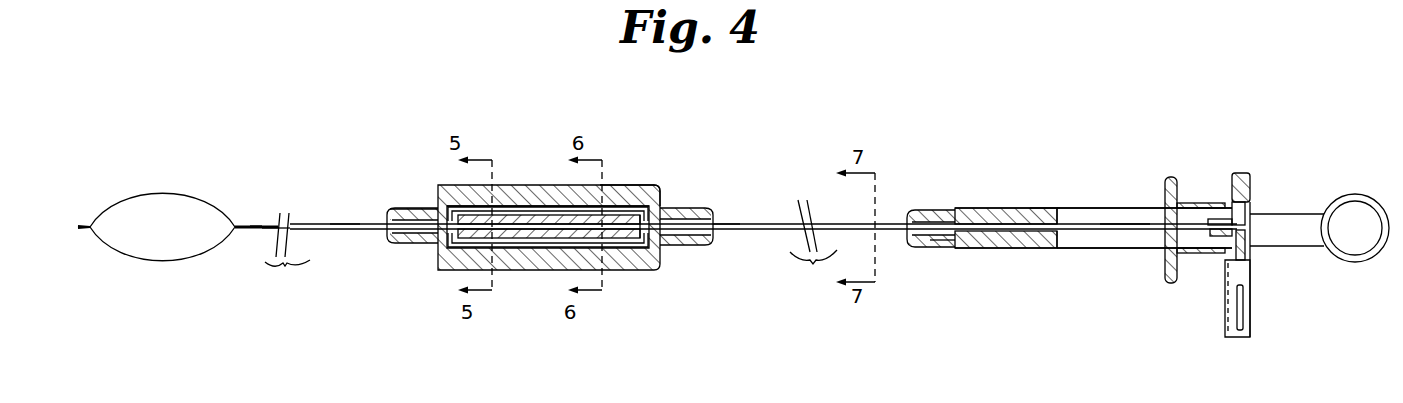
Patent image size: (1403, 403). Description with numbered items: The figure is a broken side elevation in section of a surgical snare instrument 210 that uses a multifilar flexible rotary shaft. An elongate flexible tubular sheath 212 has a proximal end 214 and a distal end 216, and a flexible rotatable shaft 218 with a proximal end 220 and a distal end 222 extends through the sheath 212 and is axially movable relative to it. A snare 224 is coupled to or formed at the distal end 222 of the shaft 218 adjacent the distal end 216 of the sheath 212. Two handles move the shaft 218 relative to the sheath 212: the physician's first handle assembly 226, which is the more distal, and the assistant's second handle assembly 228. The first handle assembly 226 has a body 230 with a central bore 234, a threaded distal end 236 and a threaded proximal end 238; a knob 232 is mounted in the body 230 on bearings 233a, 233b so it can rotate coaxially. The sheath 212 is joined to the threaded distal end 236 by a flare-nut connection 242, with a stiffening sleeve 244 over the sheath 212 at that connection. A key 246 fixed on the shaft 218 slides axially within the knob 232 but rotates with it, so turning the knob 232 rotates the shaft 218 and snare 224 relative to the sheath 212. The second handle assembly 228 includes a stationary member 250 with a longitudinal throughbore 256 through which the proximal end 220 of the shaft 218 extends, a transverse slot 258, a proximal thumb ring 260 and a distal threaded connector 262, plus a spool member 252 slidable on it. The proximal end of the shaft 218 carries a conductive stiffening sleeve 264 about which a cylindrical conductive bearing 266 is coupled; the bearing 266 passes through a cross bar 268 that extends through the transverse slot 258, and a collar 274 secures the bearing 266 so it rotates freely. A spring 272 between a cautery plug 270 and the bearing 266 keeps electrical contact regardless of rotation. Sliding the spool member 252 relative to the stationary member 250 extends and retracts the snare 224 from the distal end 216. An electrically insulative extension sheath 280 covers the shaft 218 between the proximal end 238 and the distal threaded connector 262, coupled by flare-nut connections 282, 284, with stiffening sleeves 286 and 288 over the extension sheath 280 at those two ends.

The surgical snare instrument 210 is at (841, 126).
The elongate flexible tubular sheath 212 is at (268, 232).
The proximal end of the sheath 214 is at (297, 222).
The distal end of the sheath 216 is at (256, 225).
The flexible rotatable shaft 218 is at (355, 223).
The proximal end of the shaft 220 is at (970, 226).
The distal end of the shaft 222 is at (256, 231).
The snare 224 is at (150, 193).
The first handle assembly 226 is at (547, 160).
The second handle assembly 228 is at (1178, 152).
The body 230 is at (635, 187).
The knob 232 is at (540, 239).
The bearing 233a is at (448, 240).
The bearing 233b is at (646, 262).
The central bore 234 is at (522, 200).
The threaded distal end 236 is at (398, 208).
The threaded proximal end 238 is at (681, 207).
The flare-nut connection 242 is at (393, 245).
The stiffening sleeve 244 is at (340, 232).
The key 246 is at (641, 249).
The stationary member 250 is at (1043, 208).
The spool member 252 is at (1241, 185).
The longitudinal throughbore 256 is at (1018, 249).
The transverse slot 258 is at (1082, 215).
The proximal thumb ring 260 is at (1380, 195).
The distal threaded connector 262 is at (947, 248).
The conductive stiffening sleeve 264 is at (1127, 230).
The cylindrical conductive bearing 266 is at (1254, 212).
The cross bar 268 is at (1230, 205).
The cautery plug 270 is at (1253, 308).
The spring 272 is at (1226, 262).
The collar 274 is at (1215, 238).
The electrically insulative extension sheath 280 is at (810, 264).
The flare-nut connection 282 is at (713, 224).
The flare-nut connection 284 is at (922, 212).
The stiffening sleeve 286 is at (778, 222).
The stiffening sleeve 288 is at (810, 212).